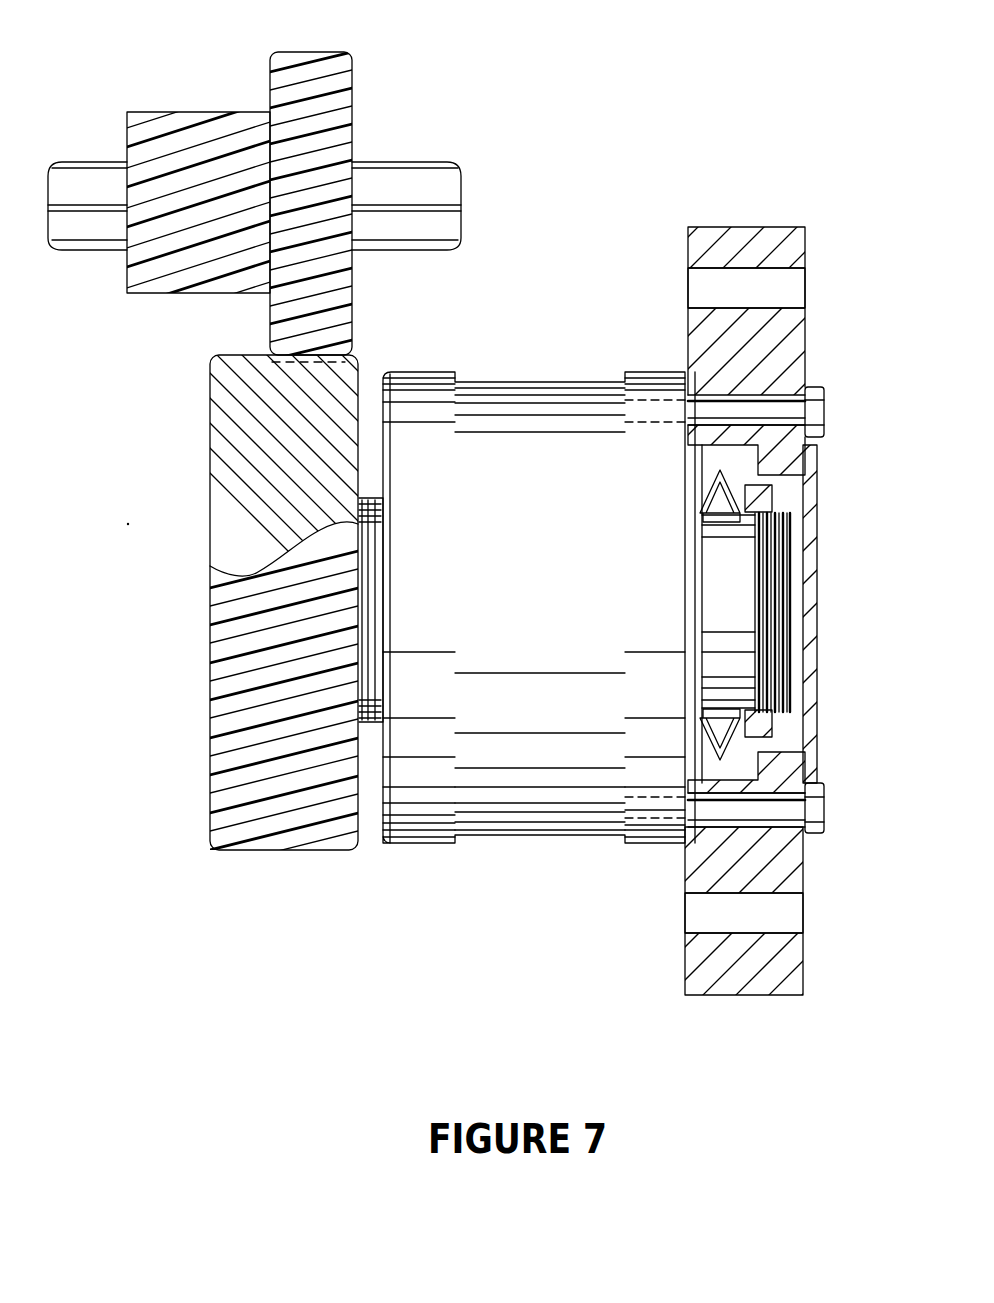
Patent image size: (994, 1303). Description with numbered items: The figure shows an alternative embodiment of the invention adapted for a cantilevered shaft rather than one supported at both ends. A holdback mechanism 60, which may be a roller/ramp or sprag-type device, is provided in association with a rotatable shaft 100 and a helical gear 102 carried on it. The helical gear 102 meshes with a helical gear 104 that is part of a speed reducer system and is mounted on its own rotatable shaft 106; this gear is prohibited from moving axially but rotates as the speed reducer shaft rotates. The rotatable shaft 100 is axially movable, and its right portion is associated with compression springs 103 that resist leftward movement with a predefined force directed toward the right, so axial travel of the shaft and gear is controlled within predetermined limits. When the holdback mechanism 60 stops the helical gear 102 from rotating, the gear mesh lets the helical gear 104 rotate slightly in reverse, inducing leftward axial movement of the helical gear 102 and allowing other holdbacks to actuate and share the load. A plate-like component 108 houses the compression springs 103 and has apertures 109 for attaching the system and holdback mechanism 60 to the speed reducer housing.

The holdback mechanism 60 is at (547, 358).
The rotatable shaft 100 is at (373, 636).
The helical gear 102 is at (310, 845).
The compression springs 103 is at (822, 408).
The helical gear 104 is at (343, 104).
The rotatable shaft 106 is at (80, 175).
The plate-like component 108 is at (733, 985).
The apertures 109 is at (795, 285).